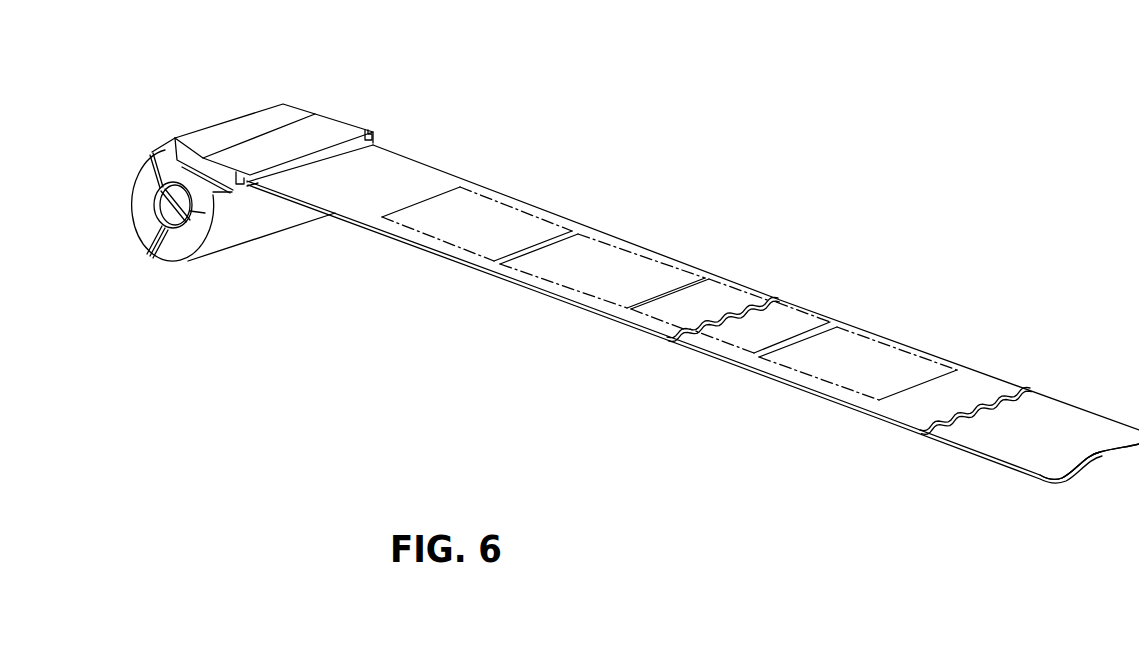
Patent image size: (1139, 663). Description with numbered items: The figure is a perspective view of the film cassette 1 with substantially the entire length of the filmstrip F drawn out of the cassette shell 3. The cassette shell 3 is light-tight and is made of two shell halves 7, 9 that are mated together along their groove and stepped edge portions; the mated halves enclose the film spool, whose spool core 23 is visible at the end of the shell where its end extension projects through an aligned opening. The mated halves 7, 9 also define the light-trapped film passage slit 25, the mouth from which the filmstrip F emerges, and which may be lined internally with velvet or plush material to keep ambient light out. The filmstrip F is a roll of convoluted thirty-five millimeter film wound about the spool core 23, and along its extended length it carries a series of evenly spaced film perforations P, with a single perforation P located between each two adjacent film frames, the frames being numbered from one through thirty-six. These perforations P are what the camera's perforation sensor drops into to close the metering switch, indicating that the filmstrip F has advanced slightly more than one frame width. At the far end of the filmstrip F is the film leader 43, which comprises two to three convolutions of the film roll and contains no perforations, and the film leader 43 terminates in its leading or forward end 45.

The film cassette 1 is at (253, 107).
The cassette shell 3 is at (200, 138).
The shell half 7 is at (137, 202).
The shell half 9 is at (188, 248).
The spool core 23 is at (160, 212).
The film passage slit 25 is at (257, 188).
The filmstrip F is at (517, 289).
The film perforations P is at (373, 221).
The film leader 43 is at (1063, 435).
The forward end 45 is at (1098, 462).